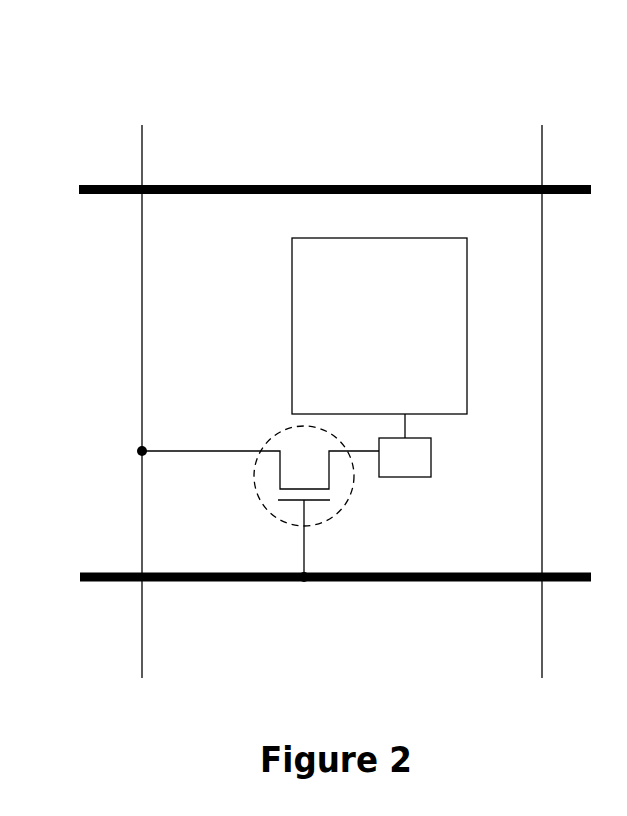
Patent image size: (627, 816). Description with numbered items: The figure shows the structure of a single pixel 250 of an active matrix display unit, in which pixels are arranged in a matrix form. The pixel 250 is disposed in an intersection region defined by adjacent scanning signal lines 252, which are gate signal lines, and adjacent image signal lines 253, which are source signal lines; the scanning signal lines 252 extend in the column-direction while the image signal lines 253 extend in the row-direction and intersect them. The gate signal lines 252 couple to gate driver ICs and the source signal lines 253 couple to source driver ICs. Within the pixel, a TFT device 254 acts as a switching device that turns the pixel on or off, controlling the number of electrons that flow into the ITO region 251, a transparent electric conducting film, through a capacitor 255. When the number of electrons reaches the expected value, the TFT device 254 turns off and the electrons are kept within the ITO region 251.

The pixel 250 is at (329, 146).
The ITO region 251 is at (379, 326).
The scanning signal line 252 is at (318, 543).
The image signal line 253 is at (135, 665).
The TFT device 254 is at (260, 435).
The capacitor 255 is at (405, 445).